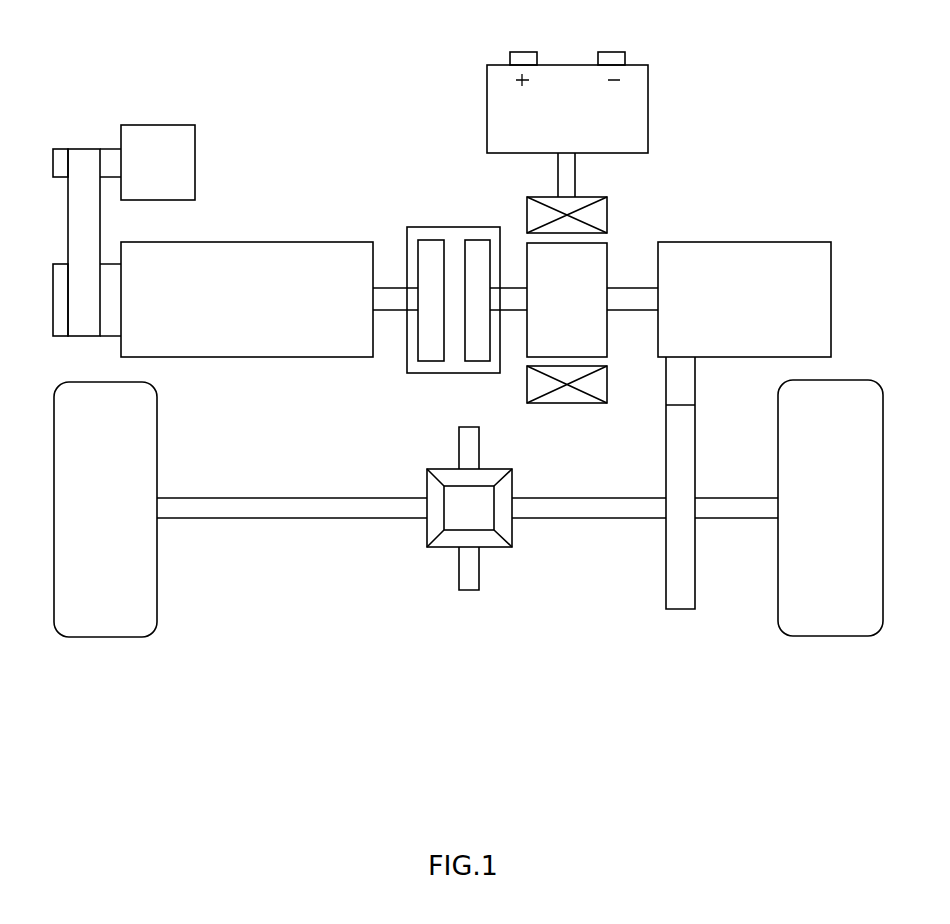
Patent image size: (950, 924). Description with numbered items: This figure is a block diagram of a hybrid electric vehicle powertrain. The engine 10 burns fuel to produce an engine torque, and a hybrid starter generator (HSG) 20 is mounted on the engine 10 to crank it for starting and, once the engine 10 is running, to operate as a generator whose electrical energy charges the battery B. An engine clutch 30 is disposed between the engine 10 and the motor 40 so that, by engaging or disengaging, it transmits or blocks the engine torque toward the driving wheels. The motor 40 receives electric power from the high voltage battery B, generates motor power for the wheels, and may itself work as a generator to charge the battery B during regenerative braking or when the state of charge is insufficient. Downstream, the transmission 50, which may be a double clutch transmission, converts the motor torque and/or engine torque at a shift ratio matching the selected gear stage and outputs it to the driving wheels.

The engine 10 is at (245, 242).
The hybrid starter generator (HSG) 20 is at (157, 125).
The engine clutch 30 is at (452, 227).
The motor 40 is at (553, 331).
The transmission 50 is at (743, 242).
The battery B is at (566, 65).